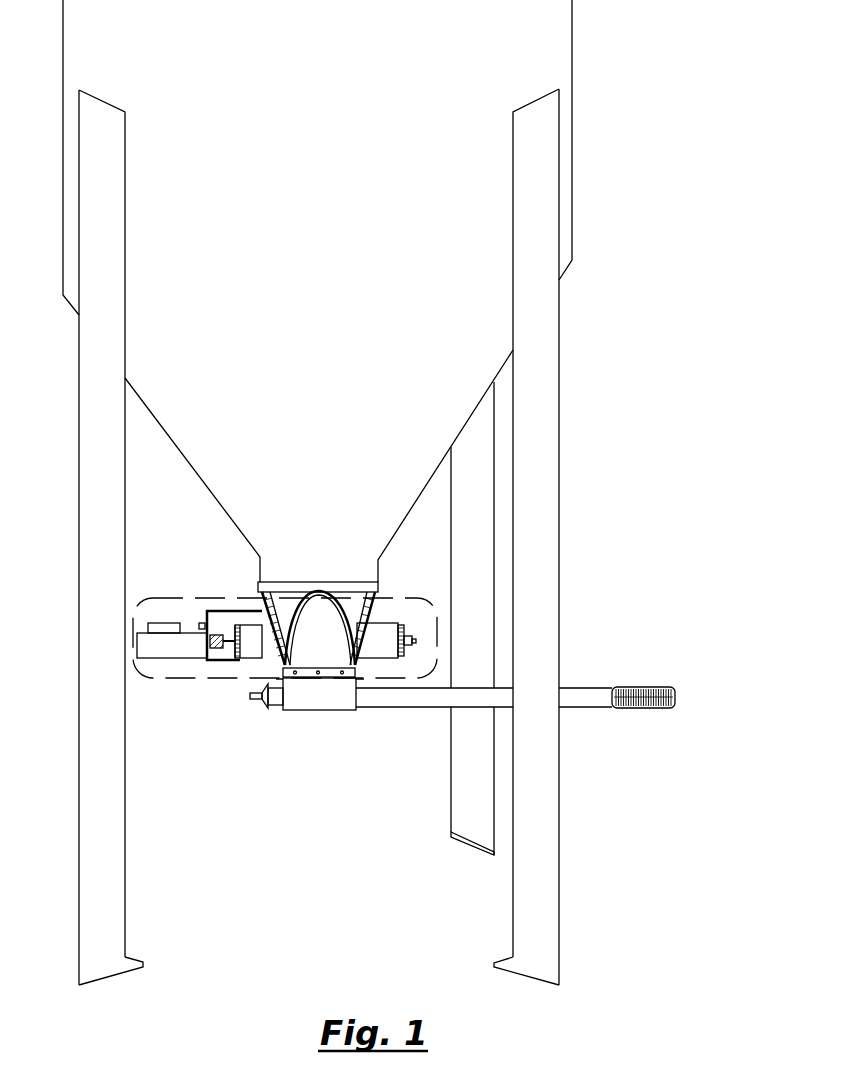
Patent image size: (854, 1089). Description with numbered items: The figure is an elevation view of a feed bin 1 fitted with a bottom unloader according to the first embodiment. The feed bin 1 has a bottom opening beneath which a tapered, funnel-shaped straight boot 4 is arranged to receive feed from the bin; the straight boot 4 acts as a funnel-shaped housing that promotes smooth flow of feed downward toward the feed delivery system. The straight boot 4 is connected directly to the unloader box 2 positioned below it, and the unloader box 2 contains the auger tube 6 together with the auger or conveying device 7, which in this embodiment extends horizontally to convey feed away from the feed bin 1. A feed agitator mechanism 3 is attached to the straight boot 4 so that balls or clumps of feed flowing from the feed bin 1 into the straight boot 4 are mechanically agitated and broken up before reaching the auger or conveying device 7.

The feed bin 1 is at (470, 313).
The unloader box 2 is at (313, 712).
The feed agitator mechanism 3 is at (178, 596).
The straight boot 4 is at (318, 627).
The auger tube 6 is at (415, 710).
The auger or conveying device 7 is at (653, 688).